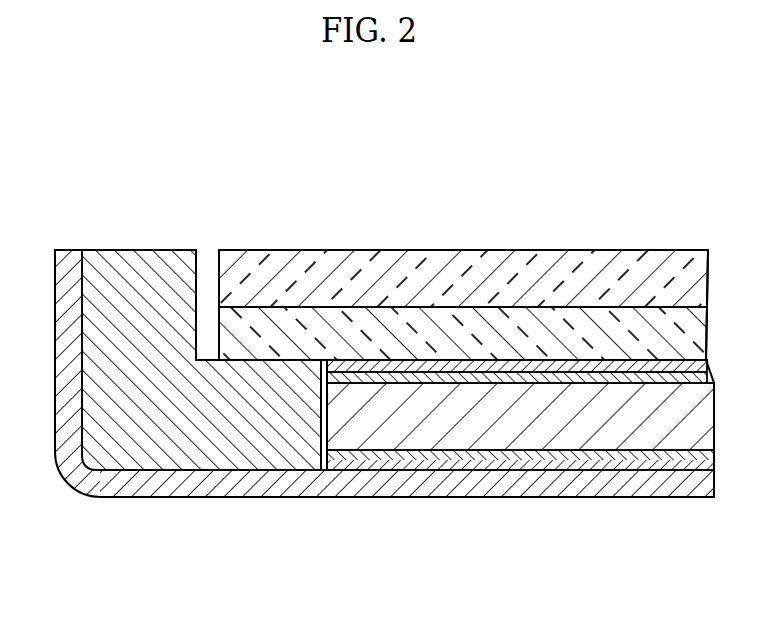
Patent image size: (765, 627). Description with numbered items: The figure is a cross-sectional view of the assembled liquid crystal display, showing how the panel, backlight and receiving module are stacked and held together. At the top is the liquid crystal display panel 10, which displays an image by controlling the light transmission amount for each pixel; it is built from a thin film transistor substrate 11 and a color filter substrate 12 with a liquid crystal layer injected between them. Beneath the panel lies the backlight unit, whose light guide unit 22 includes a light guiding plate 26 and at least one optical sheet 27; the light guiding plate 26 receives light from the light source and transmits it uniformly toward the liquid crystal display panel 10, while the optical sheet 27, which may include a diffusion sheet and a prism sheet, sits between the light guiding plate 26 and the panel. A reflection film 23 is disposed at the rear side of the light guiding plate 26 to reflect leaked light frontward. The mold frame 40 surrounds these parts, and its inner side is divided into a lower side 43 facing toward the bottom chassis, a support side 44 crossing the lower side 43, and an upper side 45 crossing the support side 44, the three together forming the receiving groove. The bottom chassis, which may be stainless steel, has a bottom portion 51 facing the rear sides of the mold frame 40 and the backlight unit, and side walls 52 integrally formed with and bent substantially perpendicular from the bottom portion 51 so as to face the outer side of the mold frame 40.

The liquid crystal display panel 10 is at (382, 198).
The thin film transistor substrate 11 is at (513, 325).
The color filter substrate 12 is at (400, 278).
The light guide unit 22 is at (517, 552).
The reflection film 23 is at (445, 460).
The light guiding plate 26 is at (535, 440).
The optical sheet 27 is at (625, 382).
The mold frame 40 is at (122, 258).
The lower side 43 is at (325, 420).
The support side 44 is at (288, 360).
The upper side 45 is at (205, 265).
The bottom portion 51 is at (199, 484).
The side walls 52 is at (58, 340).